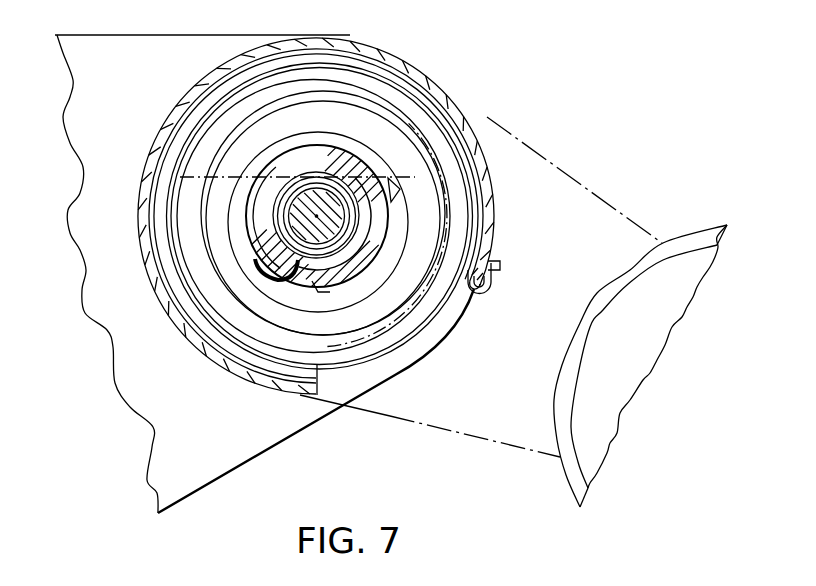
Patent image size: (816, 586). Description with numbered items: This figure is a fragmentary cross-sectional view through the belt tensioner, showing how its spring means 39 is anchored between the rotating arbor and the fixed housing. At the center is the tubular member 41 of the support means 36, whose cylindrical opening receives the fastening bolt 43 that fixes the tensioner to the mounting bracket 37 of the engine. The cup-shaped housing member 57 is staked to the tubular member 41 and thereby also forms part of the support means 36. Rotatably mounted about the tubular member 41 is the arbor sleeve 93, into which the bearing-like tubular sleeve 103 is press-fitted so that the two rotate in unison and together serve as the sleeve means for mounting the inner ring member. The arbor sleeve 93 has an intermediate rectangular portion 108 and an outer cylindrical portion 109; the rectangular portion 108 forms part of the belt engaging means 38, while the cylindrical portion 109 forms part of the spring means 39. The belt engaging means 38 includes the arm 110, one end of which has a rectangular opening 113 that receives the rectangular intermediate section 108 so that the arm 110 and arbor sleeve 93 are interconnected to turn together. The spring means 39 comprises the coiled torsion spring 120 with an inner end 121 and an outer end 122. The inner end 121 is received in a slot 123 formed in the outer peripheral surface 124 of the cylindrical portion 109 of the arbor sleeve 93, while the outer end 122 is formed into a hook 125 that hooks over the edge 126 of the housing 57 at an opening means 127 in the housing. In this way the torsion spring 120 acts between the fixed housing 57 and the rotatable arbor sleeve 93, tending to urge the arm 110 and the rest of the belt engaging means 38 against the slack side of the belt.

The support means 36 is at (338, 180).
The mounting bracket 37 is at (158, 455).
The belt engaging means 38 is at (557, 461).
The mechanical spring means 39 is at (171, 250).
The tubular member 41 is at (278, 208).
The fastening bolt 43 is at (337, 205).
The cup-shaped housing member 57 is at (387, 52).
The arbor sleeve 93 is at (377, 237).
The bearing-like tubular sleeve 103 is at (364, 211).
The intermediate rectangular portion 108 is at (180, 177).
The outer cylindrical portion 109 is at (440, 345).
The arm 110 is at (627, 215).
The rectangular opening 113 is at (224, 68).
The coiled torsion spring 120 is at (232, 340).
The inner end 121 is at (318, 290).
The outer end 122 is at (497, 263).
The slot 123 is at (254, 260).
The outer peripheral surface 124 is at (451, 299).
The hook 125 is at (487, 293).
The edge 126 is at (497, 277).
The opening means 127 is at (417, 359).